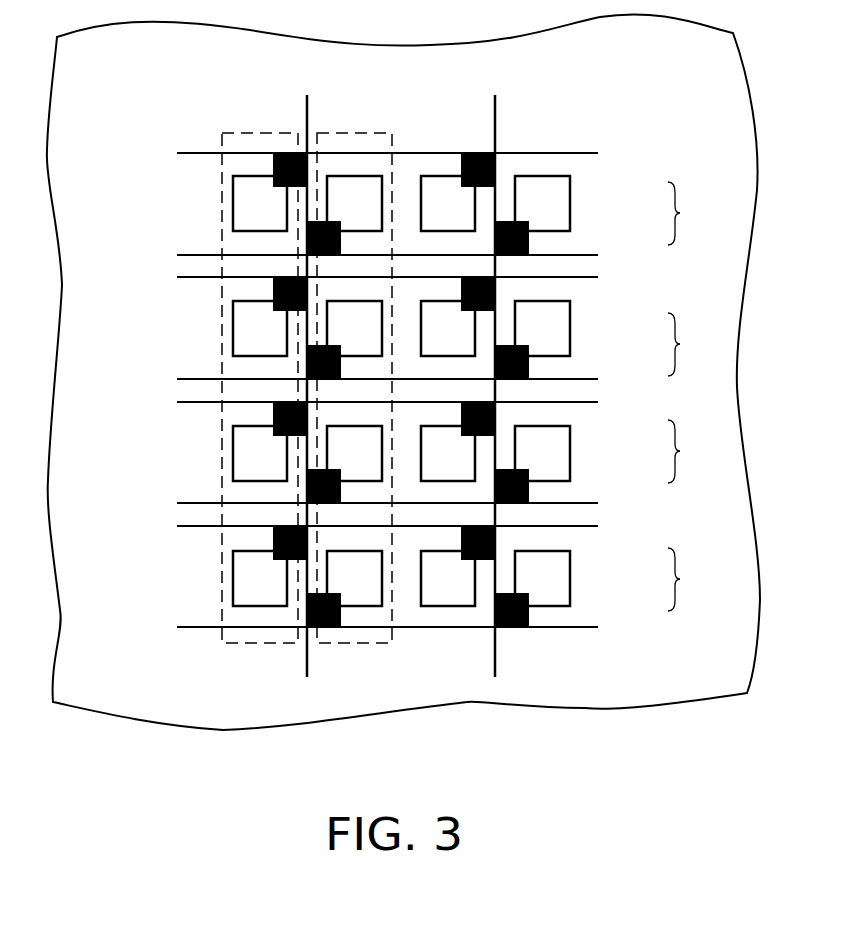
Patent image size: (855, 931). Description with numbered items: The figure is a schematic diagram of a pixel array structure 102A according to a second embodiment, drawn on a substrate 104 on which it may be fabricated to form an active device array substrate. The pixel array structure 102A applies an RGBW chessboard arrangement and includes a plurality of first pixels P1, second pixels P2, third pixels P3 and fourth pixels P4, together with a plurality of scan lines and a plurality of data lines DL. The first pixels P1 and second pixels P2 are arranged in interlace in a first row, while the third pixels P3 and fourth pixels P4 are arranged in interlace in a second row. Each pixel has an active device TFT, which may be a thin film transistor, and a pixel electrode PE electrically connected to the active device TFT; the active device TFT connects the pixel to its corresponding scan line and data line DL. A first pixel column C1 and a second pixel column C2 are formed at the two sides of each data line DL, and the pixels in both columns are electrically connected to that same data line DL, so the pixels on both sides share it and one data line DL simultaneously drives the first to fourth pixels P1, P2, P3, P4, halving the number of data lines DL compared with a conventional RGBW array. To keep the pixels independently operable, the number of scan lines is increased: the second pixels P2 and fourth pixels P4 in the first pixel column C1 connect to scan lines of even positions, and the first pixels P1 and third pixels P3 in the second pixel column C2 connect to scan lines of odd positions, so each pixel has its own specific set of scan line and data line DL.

The substrate 104 is at (720, 122).
The pixel array structure 102A is at (702, 677).
The data line DL is at (400, 366).
The pixel electrode PE is at (570, 204).
The active device TFT is at (529, 244).
The first pixel P1 is at (689, 451).
The second pixel P2 is at (689, 213).
The third pixel P3 is at (689, 579).
The fourth pixel P4 is at (689, 344).
The first pixel column C1 is at (383, 643).
The second pixel column C2 is at (250, 643).